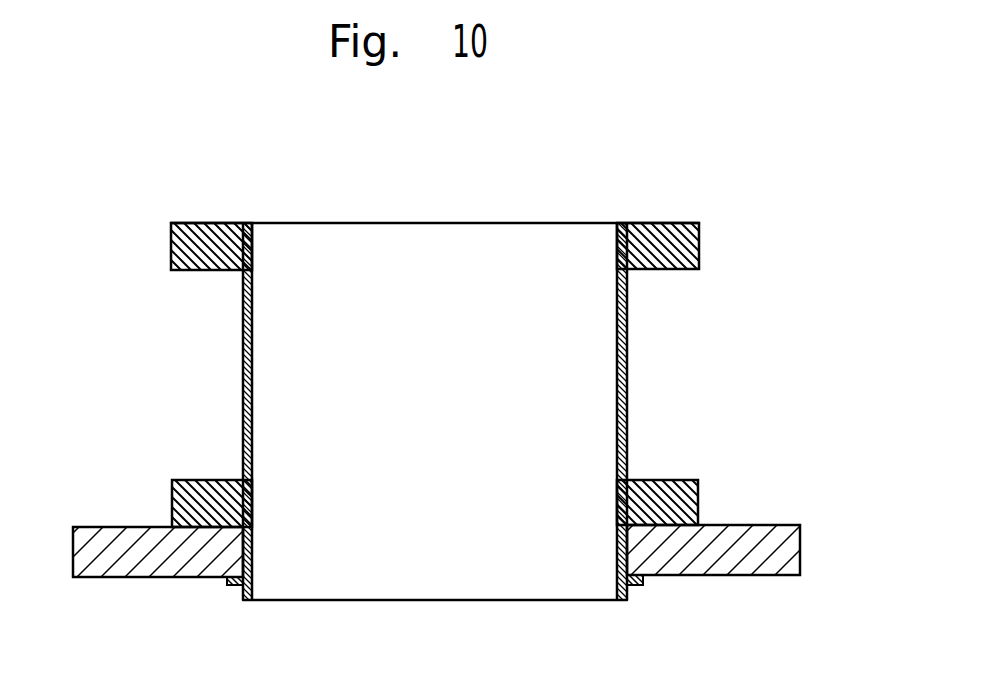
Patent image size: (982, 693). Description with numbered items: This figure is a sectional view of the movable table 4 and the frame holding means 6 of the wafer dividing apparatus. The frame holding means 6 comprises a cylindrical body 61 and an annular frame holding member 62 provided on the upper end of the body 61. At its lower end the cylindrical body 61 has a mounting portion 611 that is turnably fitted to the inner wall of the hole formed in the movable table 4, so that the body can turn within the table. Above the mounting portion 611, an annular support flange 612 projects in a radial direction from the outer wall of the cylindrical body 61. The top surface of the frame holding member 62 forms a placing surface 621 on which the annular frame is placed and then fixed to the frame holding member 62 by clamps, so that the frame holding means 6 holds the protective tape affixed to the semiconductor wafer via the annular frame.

The frame holding means 6 is at (428, 193).
The cylindrical body 61 is at (627, 400).
The annular frame holding member 62 is at (219, 228).
The placing surface 621 is at (655, 228).
The annular support flange 612 is at (206, 482).
The mounting portion 611 is at (249, 548).
The movable table 4 is at (150, 576).